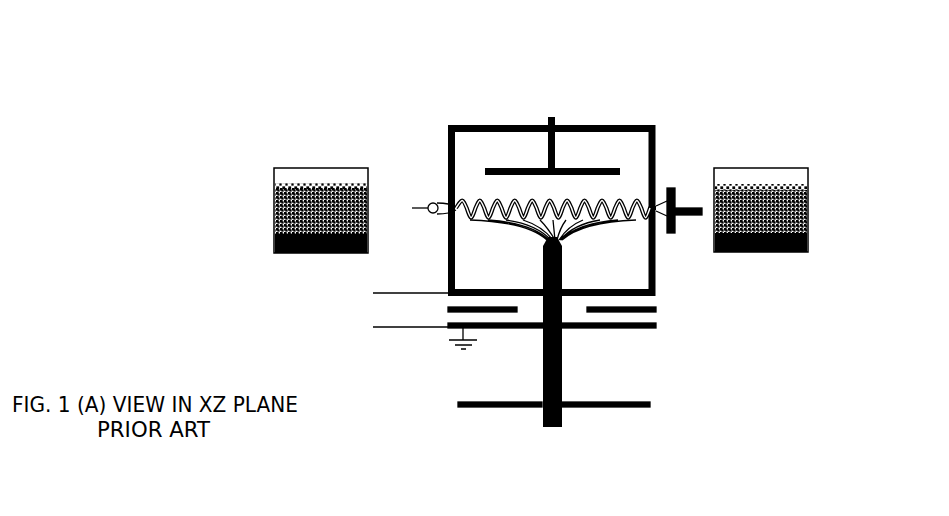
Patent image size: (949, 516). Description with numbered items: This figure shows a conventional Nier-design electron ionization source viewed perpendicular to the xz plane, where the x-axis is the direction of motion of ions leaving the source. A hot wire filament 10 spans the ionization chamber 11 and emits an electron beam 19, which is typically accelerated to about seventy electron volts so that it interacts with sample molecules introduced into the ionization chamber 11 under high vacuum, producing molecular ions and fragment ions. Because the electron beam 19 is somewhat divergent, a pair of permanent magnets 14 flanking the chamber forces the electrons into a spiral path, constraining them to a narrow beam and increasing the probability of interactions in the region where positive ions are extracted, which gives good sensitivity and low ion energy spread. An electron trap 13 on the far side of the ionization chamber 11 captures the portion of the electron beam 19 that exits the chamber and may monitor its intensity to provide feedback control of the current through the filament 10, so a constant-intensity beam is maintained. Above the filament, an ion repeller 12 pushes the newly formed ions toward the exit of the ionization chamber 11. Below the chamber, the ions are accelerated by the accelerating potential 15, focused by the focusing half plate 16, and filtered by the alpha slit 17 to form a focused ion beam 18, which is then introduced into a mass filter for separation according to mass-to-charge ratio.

The filament 10 is at (417, 195).
The ionization chamber 11 is at (447, 127).
The ion repeller 12 is at (552, 120).
The electron trap 13 is at (683, 178).
The permanent magnets 14 is at (593, 210).
The accelerating potential 15 is at (410, 362).
The focusing half plate 16 is at (665, 299).
The alpha slit 17 is at (613, 395).
The focused ion beam 18 is at (550, 360).
The electron beam 19 is at (627, 192).